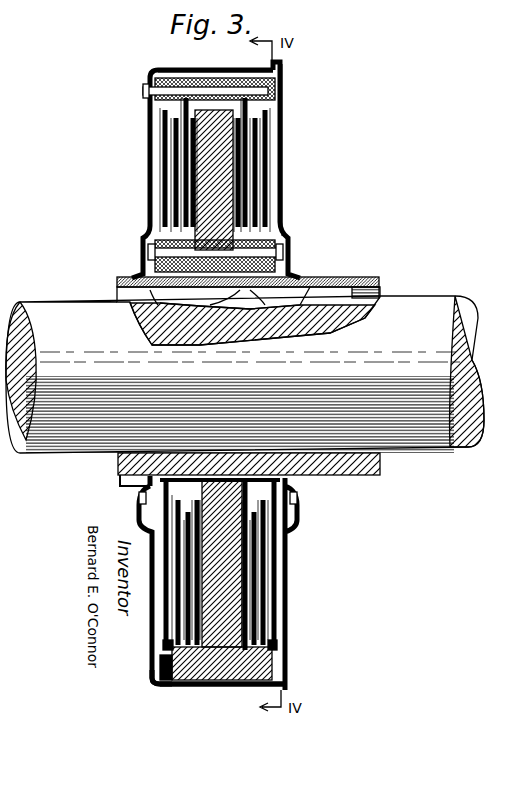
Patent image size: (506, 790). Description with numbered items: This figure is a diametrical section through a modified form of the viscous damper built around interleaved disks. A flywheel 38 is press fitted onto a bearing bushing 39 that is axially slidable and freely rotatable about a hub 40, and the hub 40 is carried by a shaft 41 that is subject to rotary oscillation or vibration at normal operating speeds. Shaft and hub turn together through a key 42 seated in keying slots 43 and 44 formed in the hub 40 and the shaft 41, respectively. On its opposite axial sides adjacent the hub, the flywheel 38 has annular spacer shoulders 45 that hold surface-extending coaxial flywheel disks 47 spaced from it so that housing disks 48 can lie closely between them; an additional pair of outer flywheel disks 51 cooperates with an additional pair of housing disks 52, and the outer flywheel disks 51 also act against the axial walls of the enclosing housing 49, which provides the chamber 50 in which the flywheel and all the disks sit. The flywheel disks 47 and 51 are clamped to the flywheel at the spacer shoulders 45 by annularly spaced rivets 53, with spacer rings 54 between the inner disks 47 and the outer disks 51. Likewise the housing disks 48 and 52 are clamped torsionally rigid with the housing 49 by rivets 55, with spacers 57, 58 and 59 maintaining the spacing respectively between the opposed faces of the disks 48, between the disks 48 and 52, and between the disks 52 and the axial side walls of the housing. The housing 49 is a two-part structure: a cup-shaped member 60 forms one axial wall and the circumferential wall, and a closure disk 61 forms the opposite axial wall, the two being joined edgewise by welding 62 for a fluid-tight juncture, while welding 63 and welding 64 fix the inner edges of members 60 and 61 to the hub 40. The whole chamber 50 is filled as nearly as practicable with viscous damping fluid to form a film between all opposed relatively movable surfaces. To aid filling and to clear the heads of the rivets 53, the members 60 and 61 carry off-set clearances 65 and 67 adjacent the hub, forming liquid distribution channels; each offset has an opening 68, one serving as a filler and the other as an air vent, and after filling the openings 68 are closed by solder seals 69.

The flywheel 38 is at (222, 682).
The bearing bushing 39 is at (152, 480).
The hub 40 is at (336, 475).
The shaft 41 is at (452, 440).
The key 42 is at (228, 328).
The keying slot 43 is at (380, 290).
The keying slot 44 is at (318, 318).
The annular spacer shoulders 45 is at (265, 500).
The flywheel disks 47 is at (300, 586).
The housing disks 48 is at (330, 628).
The housing 49 is at (176, 694).
The chamber 50 is at (272, 662).
The outer flywheel disks 51 is at (300, 642).
The housing disks 52 is at (310, 608).
The rivets 53 is at (168, 250).
The rings 54 is at (262, 292).
The rivets 55 is at (143, 92).
The spacers 57 is at (232, 688).
The spacers 58 is at (260, 716).
The spacers 59 is at (158, 686).
The cup-shaped member 60 is at (148, 176).
The closure disk 61 is at (281, 146).
The welding 62 is at (270, 64).
The welding 63 is at (118, 488).
The welding 64 is at (302, 277).
The off-set clearance 65 is at (146, 252).
The off-set clearance 67 is at (287, 252).
The opening 68 is at (310, 540).
The solder seals 69 is at (340, 515).